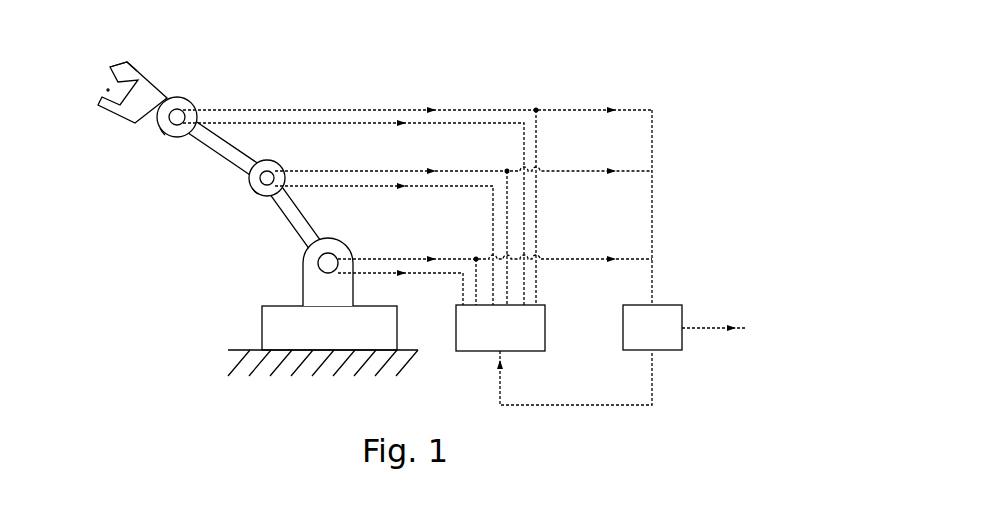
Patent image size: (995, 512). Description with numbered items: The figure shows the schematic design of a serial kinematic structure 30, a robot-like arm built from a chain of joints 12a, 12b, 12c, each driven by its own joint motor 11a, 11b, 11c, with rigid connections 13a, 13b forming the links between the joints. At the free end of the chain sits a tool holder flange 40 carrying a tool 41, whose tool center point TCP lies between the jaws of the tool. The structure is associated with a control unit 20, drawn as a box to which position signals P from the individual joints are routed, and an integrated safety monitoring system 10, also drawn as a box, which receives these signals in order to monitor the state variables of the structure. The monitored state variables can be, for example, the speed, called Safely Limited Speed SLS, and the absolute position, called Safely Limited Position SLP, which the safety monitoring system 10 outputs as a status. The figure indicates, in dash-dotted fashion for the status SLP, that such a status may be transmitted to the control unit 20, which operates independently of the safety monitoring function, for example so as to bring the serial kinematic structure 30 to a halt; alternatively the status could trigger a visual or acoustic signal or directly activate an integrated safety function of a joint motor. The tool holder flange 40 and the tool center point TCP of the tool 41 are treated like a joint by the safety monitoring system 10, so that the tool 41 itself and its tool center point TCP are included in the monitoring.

The safety monitoring system 10 is at (662, 322).
The control unit 20 is at (473, 340).
The serial kinematic structure 30 is at (128, 277).
The tool holder flange 40 is at (158, 95).
The tool 41 is at (127, 62).
The joint motor 11a is at (307, 268).
The joint motor 11b is at (250, 182).
The joint motor 11c is at (160, 123).
The joint 12a is at (302, 287).
The joint 12b is at (253, 195).
The joint 12c is at (163, 133).
The rigid connection 13a is at (282, 220).
The rigid connection 13b is at (197, 145).
The tool center point TCP is at (110, 90).
The position P is at (417, 194).
The Safely Limited Position SLP is at (574, 378).
The Safely Limited Speed SLS is at (713, 314).